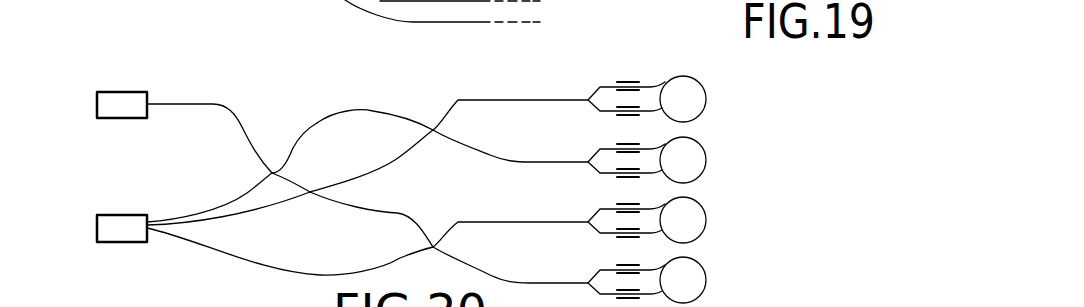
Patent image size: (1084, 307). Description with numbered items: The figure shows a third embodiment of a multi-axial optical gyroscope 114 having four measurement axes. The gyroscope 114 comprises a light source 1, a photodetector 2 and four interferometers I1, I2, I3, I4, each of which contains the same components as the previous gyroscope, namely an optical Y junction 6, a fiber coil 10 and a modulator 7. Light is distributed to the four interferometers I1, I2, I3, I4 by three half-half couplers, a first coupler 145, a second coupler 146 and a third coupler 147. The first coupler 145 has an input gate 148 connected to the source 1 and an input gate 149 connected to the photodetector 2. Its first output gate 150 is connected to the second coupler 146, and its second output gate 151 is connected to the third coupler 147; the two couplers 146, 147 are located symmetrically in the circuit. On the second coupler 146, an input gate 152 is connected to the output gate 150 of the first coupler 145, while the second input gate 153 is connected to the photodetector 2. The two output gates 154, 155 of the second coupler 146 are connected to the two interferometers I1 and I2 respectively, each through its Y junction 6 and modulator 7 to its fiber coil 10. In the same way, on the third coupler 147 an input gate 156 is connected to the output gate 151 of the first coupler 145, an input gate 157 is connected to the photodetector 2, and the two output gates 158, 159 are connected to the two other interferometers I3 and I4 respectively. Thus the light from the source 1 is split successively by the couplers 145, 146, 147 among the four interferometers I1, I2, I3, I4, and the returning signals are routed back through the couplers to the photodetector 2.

The light source 1 is at (95, 108).
The photodetector 2 is at (96, 213).
The optical Y junction 6 is at (585, 83).
The modulator 7 is at (637, 103).
The fiber coil 10 is at (707, 148).
The gyroscope 114 is at (334, 86).
The first coupler 145 is at (273, 150).
The second coupler 146 is at (428, 104).
The third coupler 147 is at (443, 218).
The input gate 148 is at (242, 127).
The input gate 149 is at (253, 195).
The first output gate 150 is at (295, 147).
The second output gate 151 is at (298, 178).
The input gate 152 is at (398, 110).
The second input gate 153 is at (413, 142).
The output gate 154 is at (462, 101).
The output gate 155 is at (463, 140).
The input gate 156 is at (414, 221).
The input gate 157 is at (392, 262).
The output gate 158 is at (471, 222).
The output gate 159 is at (468, 263).
The first interferometer I1 is at (720, 80).
The second interferometer I2 is at (720, 168).
The third interferometer I3 is at (720, 208).
The fourth interferometer I4 is at (720, 290).